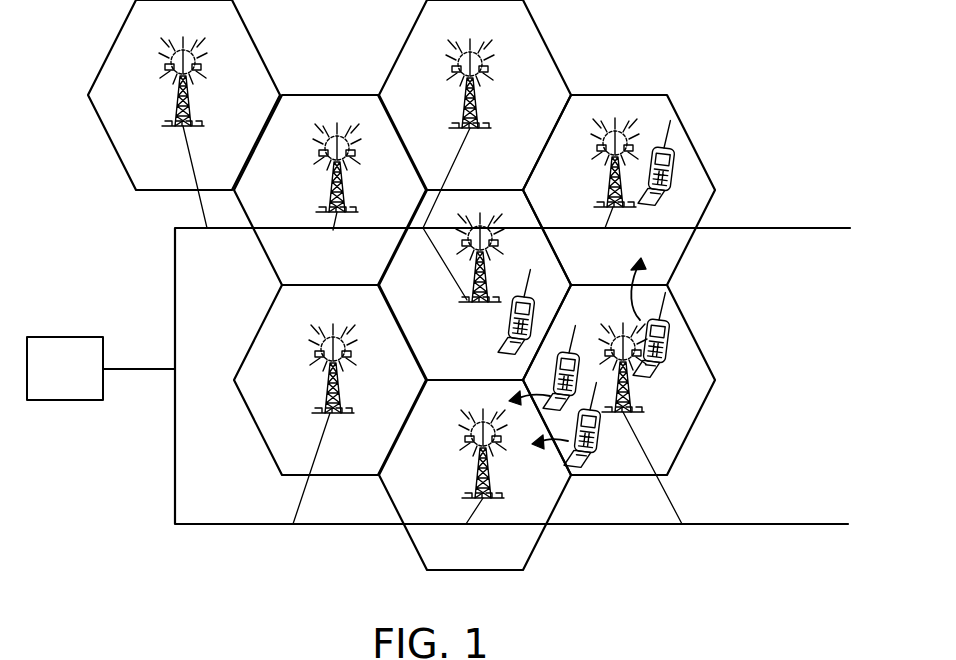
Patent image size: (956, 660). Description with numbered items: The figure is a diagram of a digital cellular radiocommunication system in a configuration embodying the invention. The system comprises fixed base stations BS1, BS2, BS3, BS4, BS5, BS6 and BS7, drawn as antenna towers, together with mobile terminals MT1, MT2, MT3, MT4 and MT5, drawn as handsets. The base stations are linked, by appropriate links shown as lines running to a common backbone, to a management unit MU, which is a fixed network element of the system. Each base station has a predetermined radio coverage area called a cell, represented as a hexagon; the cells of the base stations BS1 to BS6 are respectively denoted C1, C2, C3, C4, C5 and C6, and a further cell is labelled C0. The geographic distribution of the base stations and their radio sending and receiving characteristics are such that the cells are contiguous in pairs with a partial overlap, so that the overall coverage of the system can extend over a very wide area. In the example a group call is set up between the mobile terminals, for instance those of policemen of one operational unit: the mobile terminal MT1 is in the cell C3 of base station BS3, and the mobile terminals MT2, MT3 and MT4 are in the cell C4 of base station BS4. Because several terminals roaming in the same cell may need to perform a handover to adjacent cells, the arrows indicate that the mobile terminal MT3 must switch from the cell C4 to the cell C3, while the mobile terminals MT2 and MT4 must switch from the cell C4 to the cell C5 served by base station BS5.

The management unit MU is at (101, 368).
The base station BS1 is at (332, 187).
The base station BS2 is at (463, 100).
The base station BS3 is at (607, 183).
The base station BS4 is at (630, 392).
The base station BS5 is at (478, 477).
The base station BS6 is at (330, 384).
The base station 7 BS7 is at (498, 236).
The mobile terminal MT1 is at (675, 170).
The mobile terminal MT2 is at (575, 357).
The mobile terminal MT3 is at (672, 337).
The mobile terminal MT4 is at (593, 460).
The mobile terminal MT5 is at (508, 328).
The cell 0 C0 is at (467, 380).
The cell C1 is at (394, 253).
The cell C2 is at (537, 37).
The cell C3 is at (604, 95).
The cell C4 is at (699, 349).
The cell C5 is at (467, 570).
The cell C6 is at (317, 285).